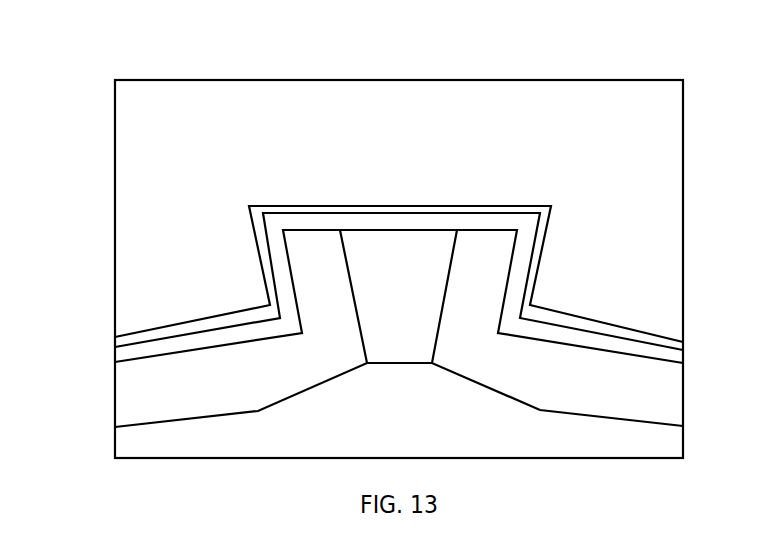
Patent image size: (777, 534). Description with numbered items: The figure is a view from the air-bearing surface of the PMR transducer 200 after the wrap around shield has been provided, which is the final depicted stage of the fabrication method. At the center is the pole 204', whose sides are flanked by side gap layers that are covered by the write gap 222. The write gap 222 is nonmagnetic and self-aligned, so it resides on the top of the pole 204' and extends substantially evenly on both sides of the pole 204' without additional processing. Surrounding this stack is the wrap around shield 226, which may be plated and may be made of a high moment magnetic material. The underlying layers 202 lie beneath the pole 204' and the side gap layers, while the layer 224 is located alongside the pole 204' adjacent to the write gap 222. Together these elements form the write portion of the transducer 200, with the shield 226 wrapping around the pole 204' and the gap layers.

The PMR transducer 200 is at (418, 59).
The wrap around shield 226 is at (115, 128).
The pole 204' is at (365, 256).
The side gap layer (left) 224 is at (115, 343).
The write gap 222 is at (683, 355).
The underlayer 202 is at (685, 445).